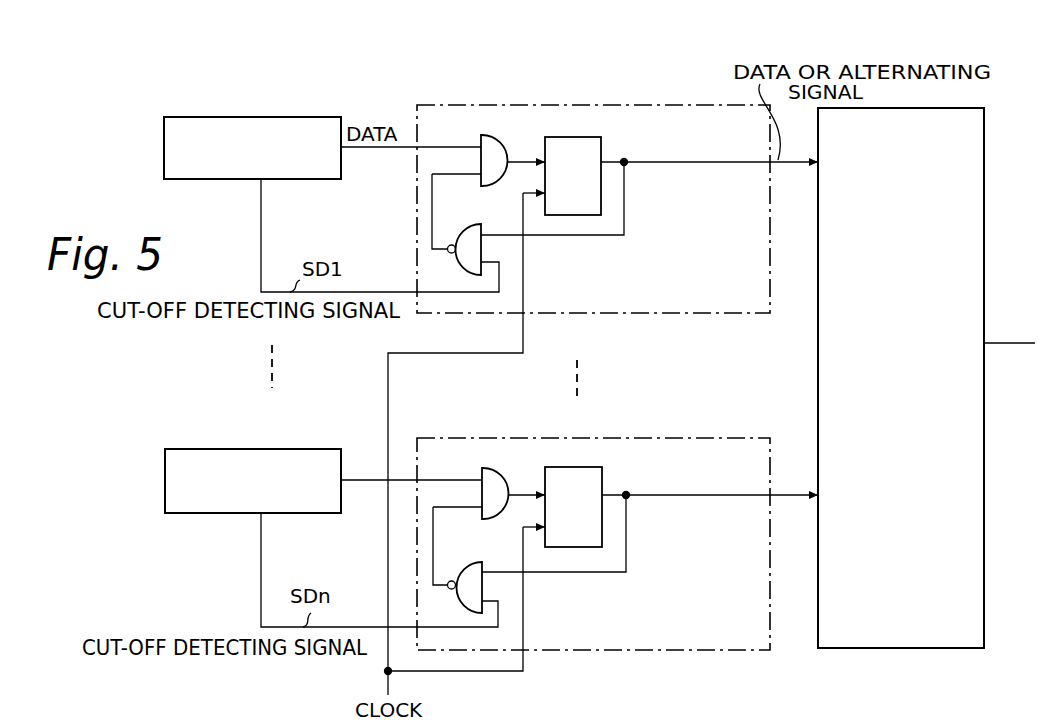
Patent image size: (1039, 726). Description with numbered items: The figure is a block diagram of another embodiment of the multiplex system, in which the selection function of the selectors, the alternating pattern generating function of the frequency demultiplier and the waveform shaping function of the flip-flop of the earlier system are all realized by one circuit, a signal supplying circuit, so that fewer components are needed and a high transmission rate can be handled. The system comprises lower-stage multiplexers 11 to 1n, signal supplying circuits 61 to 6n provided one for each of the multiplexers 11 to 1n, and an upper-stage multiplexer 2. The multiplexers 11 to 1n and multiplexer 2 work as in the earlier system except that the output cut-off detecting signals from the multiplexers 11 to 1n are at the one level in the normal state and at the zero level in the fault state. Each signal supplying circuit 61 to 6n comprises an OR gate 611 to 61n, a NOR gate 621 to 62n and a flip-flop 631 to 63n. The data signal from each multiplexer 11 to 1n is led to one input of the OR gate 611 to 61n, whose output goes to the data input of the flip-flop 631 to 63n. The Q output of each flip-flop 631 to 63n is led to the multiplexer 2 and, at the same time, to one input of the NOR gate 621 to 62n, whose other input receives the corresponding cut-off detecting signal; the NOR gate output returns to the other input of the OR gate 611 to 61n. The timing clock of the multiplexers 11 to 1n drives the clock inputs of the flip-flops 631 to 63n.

The multiplexer 11 is at (245, 118).
The multiplexer 1n is at (256, 449).
The multiplexer 2 is at (988, 163).
The signal supplying circuit 61 is at (575, 105).
The signal supplying circuit 6n is at (638, 438).
The OR gate 611 is at (496, 136).
The NOR gate 621 is at (462, 224).
The flip-flop 631 is at (593, 137).
The OR gate 61n is at (495, 470).
The NOR gate 62n is at (467, 562).
The flip-flop 63n is at (602, 470).